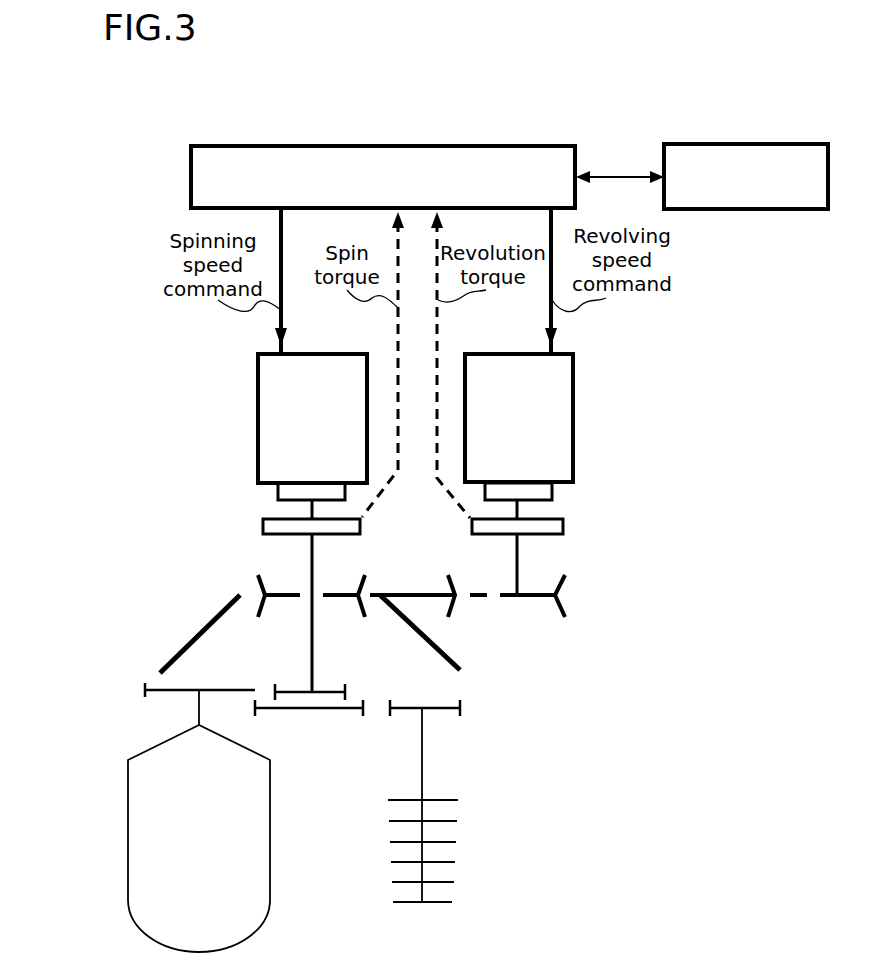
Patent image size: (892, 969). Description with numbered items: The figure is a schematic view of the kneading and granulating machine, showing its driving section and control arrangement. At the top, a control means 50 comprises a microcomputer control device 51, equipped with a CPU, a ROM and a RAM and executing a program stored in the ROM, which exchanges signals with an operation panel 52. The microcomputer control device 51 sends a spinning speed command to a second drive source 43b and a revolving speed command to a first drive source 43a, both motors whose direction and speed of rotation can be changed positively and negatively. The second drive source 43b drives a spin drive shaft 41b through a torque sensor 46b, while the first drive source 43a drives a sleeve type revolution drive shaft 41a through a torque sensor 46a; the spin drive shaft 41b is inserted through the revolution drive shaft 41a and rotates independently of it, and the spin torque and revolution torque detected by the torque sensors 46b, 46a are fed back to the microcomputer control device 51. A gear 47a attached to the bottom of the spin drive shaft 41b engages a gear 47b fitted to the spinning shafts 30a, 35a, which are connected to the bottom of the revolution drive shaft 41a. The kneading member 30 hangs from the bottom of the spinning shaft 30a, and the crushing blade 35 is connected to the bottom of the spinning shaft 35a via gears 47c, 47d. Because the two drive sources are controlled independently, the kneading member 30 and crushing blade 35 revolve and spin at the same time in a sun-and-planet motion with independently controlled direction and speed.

The kneading member 30 is at (128, 826).
The spinning shaft 30a is at (199, 706).
The crushing blade 35 is at (440, 800).
The spinning shaft 35a is at (422, 745).
The revolution drive shaft 41a is at (442, 653).
The spin drive shaft 41b is at (312, 655).
The first drive source 43a is at (573, 421).
The second drive source 43b is at (258, 428).
The torque sensor 46a is at (563, 526).
The torque sensor 46b is at (263, 526).
The gear 47a is at (327, 692).
The gear 47b is at (165, 690).
The gear 47c is at (322, 710).
The gear 47d is at (440, 708).
The control means 50 is at (472, 128).
The microcomputer control device 51 is at (192, 155).
The operation panel 52 is at (805, 143).